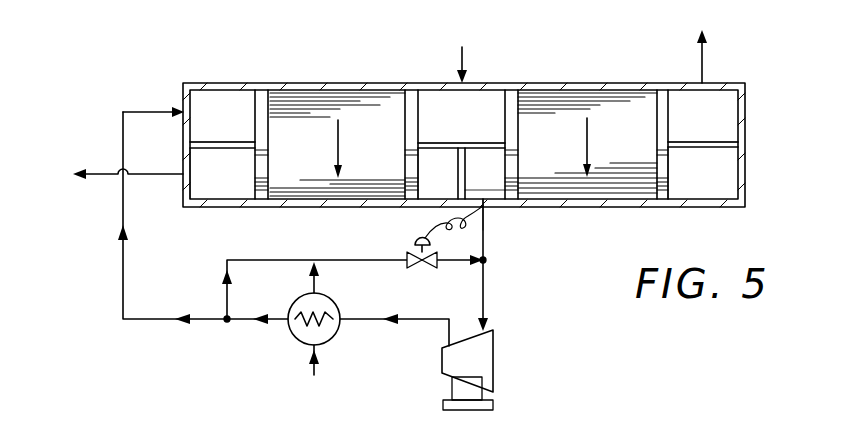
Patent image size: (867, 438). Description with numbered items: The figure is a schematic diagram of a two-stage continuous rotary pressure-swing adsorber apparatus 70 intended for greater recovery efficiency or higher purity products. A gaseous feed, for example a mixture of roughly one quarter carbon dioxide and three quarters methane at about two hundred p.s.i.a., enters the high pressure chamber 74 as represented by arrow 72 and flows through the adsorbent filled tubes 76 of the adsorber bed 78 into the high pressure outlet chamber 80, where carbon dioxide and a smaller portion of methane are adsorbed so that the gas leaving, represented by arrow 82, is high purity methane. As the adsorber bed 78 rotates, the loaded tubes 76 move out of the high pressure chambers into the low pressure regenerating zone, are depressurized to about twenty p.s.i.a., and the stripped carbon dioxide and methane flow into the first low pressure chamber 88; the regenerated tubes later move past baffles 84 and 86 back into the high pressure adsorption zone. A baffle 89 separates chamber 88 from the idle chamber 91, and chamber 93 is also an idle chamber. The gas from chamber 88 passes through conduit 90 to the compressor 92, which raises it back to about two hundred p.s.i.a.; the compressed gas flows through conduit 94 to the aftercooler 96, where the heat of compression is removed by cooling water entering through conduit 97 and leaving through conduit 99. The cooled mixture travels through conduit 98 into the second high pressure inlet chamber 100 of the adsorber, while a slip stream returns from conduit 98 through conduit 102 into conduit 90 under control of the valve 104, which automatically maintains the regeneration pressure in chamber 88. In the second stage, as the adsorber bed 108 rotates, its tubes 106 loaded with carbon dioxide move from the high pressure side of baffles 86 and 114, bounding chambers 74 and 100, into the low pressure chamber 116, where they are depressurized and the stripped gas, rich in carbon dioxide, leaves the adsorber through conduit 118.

The adsorber apparatus 70 is at (750, 118).
The arrow 72 is at (462, 47).
The high pressure chamber 74 is at (433, 103).
The adsorbent filled tubes 76 is at (538, 102).
The adsorber bed 78 is at (569, 124).
The high pressure outlet chamber 80 is at (723, 103).
The arrow 82 is at (698, 63).
The baffle 84 is at (717, 148).
The baffle 86 is at (475, 140).
The first low pressure chamber 88 is at (507, 205).
The baffle 89 is at (487, 200).
The conduit 90 is at (487, 297).
The idle chamber 91 is at (430, 167).
The compressor 92 is at (482, 367).
The idle chamber 93 is at (723, 187).
The conduit 94 is at (423, 320).
The aftercooler 96 is at (295, 345).
The conduit 97 is at (315, 367).
The conduit 98 is at (210, 322).
The conduit 99 is at (316, 285).
The second high pressure inlet chamber 100 is at (202, 103).
The conduit 102 is at (287, 258).
The valve 104 is at (412, 256).
The tubes 106 is at (283, 97).
The adsorber bed 108 is at (314, 128).
The baffle 114 is at (210, 143).
The chamber 116 is at (200, 175).
The conduit 118 is at (105, 170).